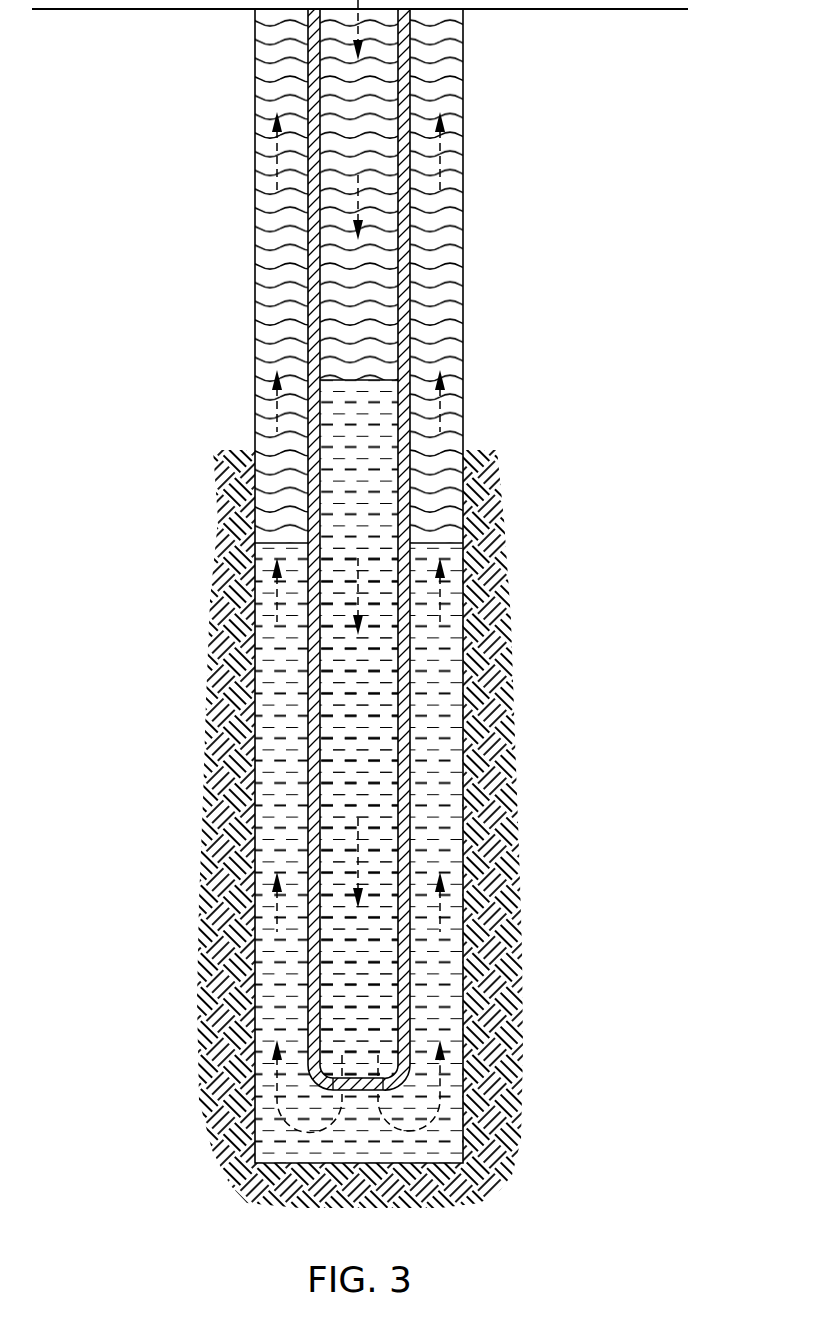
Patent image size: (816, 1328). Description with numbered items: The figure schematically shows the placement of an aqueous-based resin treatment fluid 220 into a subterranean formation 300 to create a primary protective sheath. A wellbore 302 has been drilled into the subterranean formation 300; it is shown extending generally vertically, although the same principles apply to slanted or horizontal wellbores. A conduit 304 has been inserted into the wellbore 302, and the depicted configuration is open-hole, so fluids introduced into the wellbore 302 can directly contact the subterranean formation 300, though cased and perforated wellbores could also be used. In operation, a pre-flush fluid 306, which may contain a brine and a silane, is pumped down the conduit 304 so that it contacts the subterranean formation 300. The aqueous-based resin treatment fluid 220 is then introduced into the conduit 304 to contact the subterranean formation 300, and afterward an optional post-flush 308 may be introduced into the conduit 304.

The subterranean formation 300 is at (203, 783).
The wellbore 302 is at (463, 727).
The conduit 304 is at (412, 667).
The pre-flush fluid 306 is at (457, 297).
The post-flush 308 is at (328, 195).
The aqueous-based resin treatment fluid 220 is at (388, 853).